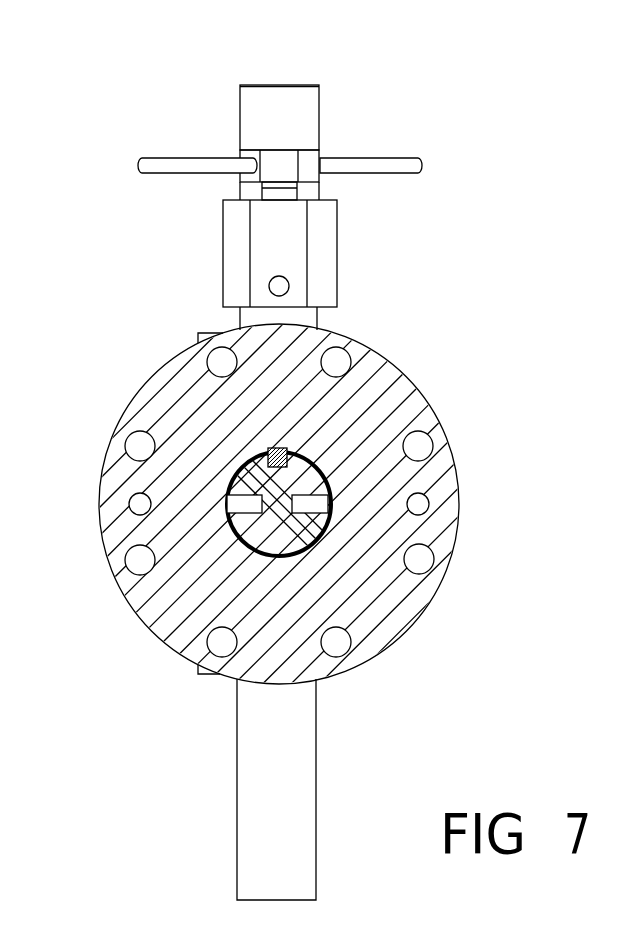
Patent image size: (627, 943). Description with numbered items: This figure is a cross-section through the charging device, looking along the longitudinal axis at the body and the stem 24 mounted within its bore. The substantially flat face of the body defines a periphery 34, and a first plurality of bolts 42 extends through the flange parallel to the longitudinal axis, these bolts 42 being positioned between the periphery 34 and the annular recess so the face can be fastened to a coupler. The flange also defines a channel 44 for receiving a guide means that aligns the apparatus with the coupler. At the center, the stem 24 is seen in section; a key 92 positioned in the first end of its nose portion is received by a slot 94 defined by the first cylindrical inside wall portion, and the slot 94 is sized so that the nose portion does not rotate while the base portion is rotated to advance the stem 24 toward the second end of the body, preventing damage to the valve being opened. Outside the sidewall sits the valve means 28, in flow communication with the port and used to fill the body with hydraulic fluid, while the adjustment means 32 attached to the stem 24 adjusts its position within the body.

The valve means 28 is at (320, 117).
The periphery 34 is at (410, 385).
The channel 44 is at (421, 498).
The first plurality of bolts 42 is at (428, 556).
The key 92 is at (288, 448).
The stem 24 is at (268, 522).
The slot 94 is at (268, 450).
The adjustment means 32 is at (318, 813).